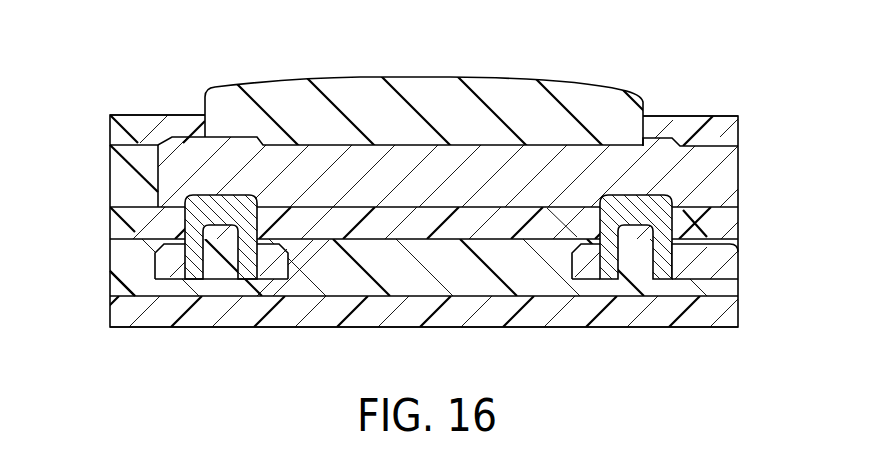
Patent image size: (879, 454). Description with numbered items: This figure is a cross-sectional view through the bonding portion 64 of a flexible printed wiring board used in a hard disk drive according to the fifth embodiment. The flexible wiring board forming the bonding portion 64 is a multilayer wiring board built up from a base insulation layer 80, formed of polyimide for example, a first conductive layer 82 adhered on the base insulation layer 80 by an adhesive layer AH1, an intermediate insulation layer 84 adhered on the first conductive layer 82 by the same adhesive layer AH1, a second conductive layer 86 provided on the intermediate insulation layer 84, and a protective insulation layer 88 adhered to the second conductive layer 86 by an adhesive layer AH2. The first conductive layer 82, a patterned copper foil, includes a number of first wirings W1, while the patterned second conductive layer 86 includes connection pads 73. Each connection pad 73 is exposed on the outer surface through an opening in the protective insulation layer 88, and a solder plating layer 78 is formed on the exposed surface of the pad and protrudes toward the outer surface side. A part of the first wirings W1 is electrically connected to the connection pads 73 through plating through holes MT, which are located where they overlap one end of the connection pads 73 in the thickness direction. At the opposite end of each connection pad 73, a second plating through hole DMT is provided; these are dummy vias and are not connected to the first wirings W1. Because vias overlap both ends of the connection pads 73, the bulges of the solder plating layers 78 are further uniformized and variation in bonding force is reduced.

The bonding portion 64 is at (157, 95).
The connection pad 73 is at (310, 163).
The solder plating layer 78 is at (443, 90).
The base insulation layer 80 is at (727, 312).
The first conductive layer 82 is at (727, 263).
The intermediate insulation layer 84 is at (727, 225).
The second conductive layer 86 is at (727, 177).
The protective insulation layer 88 is at (727, 133).
The second plating through hole DMT is at (217, 196).
The plating through hole MT is at (645, 212).
The first wiring W1 is at (712, 268).
The adhesive layer AH1 is at (113, 262).
The adhesive layer AH2 is at (113, 172).